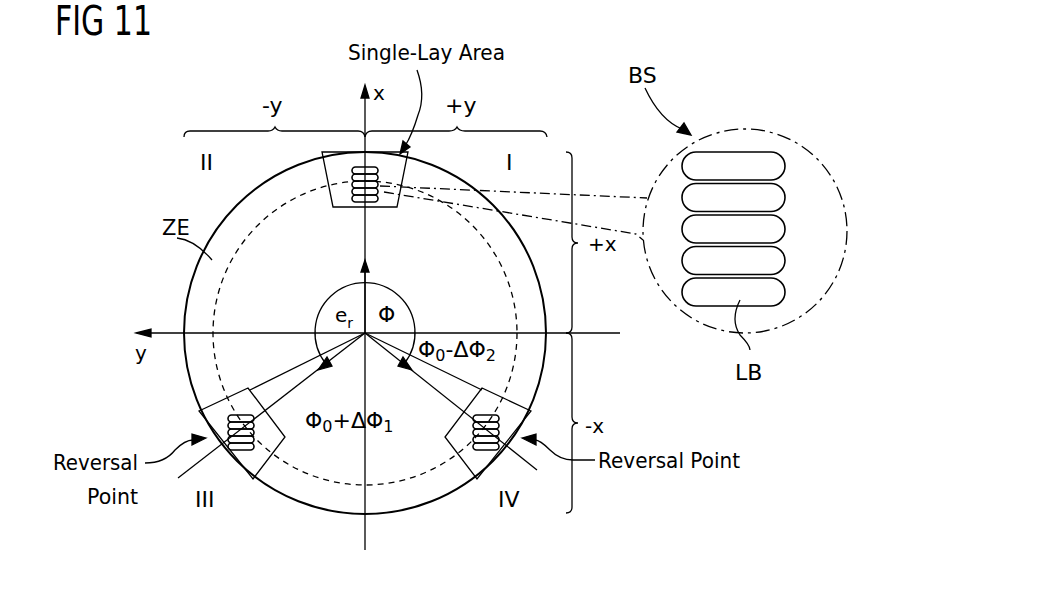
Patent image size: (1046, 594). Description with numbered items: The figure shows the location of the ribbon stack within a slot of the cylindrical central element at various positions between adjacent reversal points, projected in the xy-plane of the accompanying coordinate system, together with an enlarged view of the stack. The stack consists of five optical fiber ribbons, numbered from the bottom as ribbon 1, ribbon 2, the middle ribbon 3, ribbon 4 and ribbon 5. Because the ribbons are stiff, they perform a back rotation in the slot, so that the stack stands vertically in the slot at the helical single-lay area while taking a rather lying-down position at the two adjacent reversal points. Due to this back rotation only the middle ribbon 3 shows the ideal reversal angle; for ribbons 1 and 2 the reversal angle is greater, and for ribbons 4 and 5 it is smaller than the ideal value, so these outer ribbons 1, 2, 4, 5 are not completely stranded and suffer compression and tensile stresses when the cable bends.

The optical fiber ribbon No. 1 is at (358, 206).
The optical fiber ribbon No. 2 is at (515, 315).
The middle optical fiber ribbon No. 3 is at (350, 186).
The optical fiber ribbon No. 4 is at (515, 301).
The optical fiber ribbon No. 5 is at (353, 170).